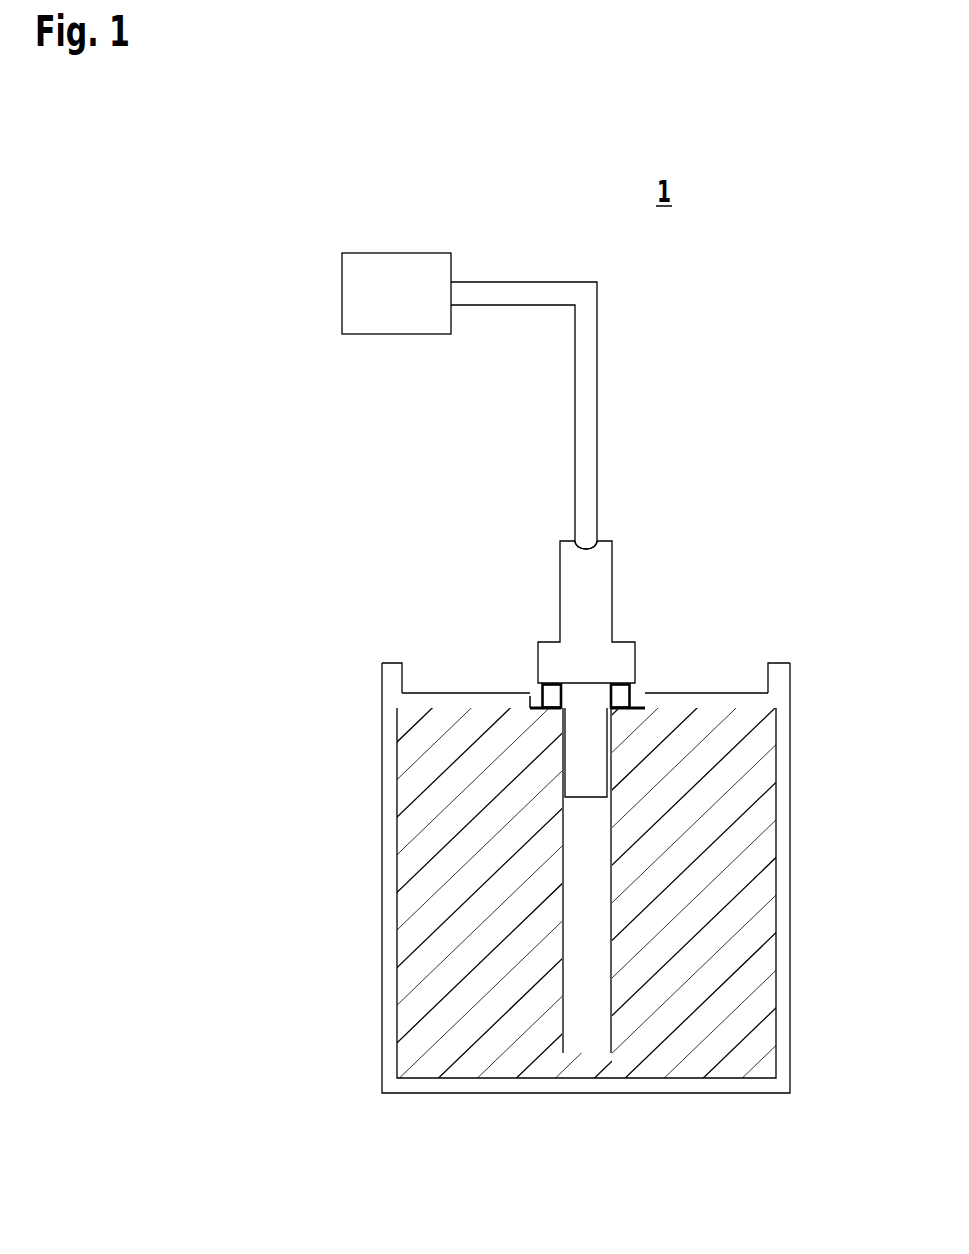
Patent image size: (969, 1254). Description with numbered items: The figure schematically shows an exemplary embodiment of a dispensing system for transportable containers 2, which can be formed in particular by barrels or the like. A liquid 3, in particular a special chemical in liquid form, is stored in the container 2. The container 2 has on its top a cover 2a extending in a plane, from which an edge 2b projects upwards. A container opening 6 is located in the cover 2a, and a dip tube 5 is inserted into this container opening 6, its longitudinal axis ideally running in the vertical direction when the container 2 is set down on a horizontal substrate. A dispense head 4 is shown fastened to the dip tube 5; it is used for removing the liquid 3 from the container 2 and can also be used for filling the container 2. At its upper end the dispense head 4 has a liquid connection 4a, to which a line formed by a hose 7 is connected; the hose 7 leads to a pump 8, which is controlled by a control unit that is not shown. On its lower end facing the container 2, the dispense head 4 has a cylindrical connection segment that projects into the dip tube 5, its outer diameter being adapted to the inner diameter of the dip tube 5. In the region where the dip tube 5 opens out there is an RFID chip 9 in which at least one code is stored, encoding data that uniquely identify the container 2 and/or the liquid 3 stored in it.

The container 2 is at (791, 893).
The cover 2a is at (710, 692).
The edge 2b is at (393, 680).
The liquid 3 is at (693, 984).
The dispense head 4 is at (594, 609).
The liquid connection 4a is at (575, 540).
The dip tube 5 is at (594, 864).
The container opening 6 is at (546, 692).
The hose 7 is at (600, 407).
The pump 8 is at (403, 309).
The RFID chip 9 is at (548, 700).